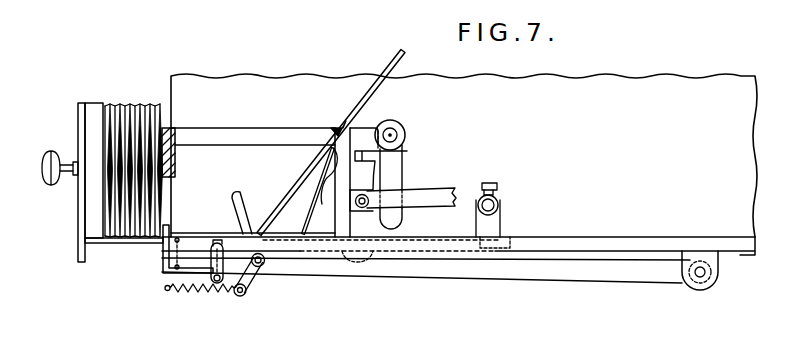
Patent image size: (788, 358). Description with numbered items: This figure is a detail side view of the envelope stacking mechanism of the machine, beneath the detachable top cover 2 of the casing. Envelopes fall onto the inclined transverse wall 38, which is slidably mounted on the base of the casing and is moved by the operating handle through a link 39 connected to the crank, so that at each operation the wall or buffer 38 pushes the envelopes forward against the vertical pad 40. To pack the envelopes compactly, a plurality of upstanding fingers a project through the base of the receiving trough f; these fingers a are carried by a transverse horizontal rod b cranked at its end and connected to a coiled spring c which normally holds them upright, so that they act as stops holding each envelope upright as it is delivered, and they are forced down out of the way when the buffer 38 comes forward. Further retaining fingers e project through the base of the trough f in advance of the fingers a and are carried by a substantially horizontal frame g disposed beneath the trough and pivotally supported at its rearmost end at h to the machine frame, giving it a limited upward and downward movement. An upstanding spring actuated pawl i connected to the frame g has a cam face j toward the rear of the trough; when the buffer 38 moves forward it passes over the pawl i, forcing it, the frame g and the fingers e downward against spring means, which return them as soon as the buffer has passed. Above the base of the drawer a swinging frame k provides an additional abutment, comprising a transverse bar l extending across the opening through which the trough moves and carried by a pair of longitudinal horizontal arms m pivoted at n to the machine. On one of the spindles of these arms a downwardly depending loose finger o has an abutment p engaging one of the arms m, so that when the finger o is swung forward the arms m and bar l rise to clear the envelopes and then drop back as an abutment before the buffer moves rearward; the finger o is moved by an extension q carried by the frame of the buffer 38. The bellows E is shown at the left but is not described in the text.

The detachable top cover 2 is at (598, 98).
The inclined transverse wall 38 is at (397, 60).
The link 39 is at (443, 196).
The vertical pad 40 is at (78, 118).
The bellows E is at (147, 104).
The upstanding fingers a is at (243, 207).
The transverse horizontal rod b is at (267, 276).
The coiled springs c is at (205, 289).
The retaining fingers e is at (163, 249).
The receiving trough f is at (116, 243).
The horizontal frame g is at (572, 277).
The pivot h is at (693, 281).
The spring actuated pawl i is at (212, 252).
The cam face j is at (218, 243).
The swinging frame k is at (219, 141).
The transverse bar l is at (176, 165).
The arms m is at (284, 141).
The pivot n is at (393, 131).
The loose finger o is at (392, 181).
The abutment p is at (364, 157).
The extension q is at (499, 201).